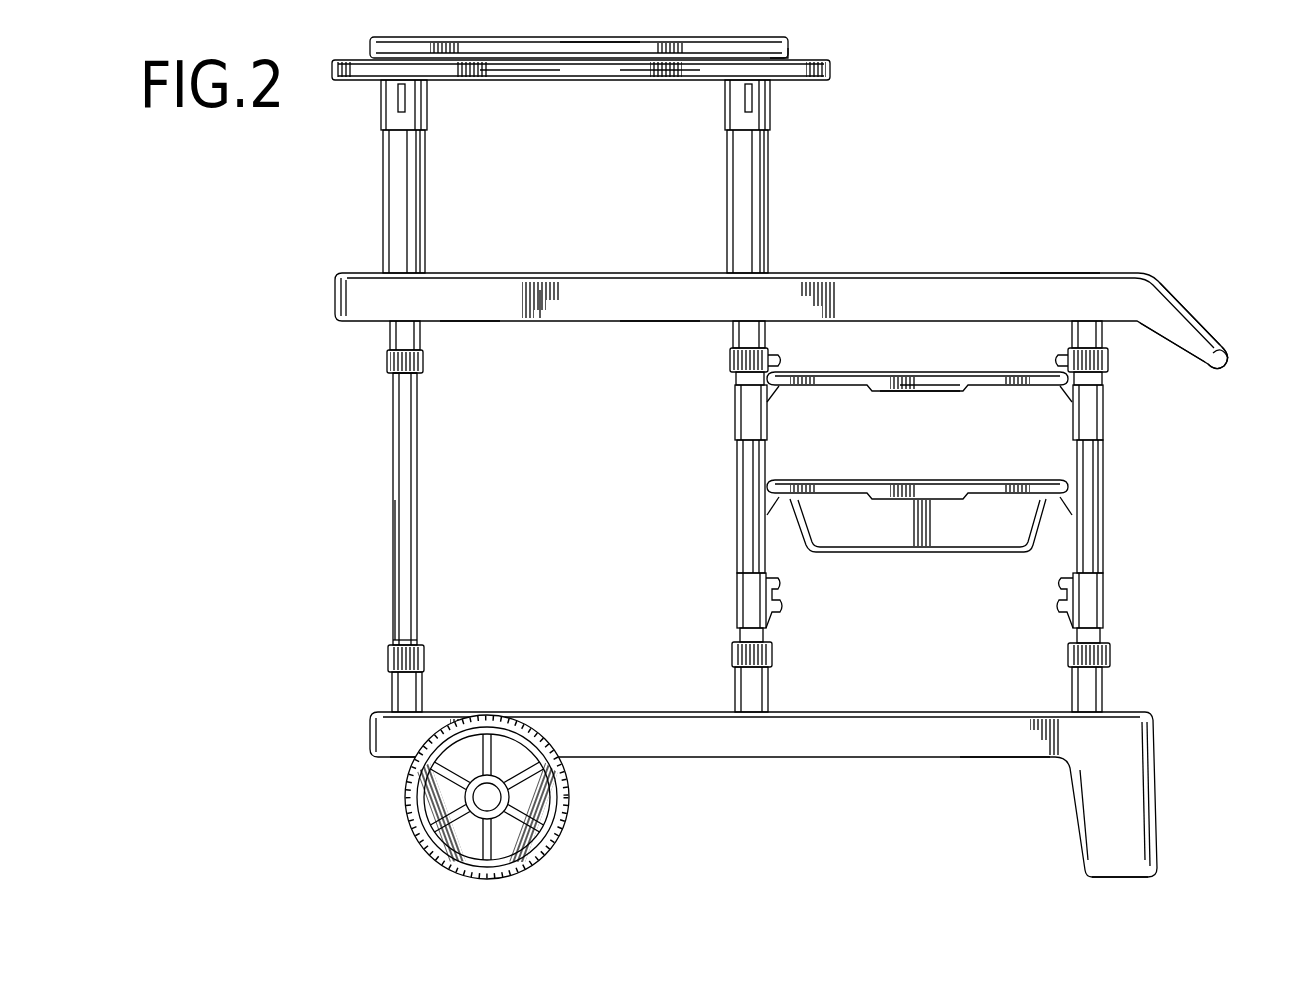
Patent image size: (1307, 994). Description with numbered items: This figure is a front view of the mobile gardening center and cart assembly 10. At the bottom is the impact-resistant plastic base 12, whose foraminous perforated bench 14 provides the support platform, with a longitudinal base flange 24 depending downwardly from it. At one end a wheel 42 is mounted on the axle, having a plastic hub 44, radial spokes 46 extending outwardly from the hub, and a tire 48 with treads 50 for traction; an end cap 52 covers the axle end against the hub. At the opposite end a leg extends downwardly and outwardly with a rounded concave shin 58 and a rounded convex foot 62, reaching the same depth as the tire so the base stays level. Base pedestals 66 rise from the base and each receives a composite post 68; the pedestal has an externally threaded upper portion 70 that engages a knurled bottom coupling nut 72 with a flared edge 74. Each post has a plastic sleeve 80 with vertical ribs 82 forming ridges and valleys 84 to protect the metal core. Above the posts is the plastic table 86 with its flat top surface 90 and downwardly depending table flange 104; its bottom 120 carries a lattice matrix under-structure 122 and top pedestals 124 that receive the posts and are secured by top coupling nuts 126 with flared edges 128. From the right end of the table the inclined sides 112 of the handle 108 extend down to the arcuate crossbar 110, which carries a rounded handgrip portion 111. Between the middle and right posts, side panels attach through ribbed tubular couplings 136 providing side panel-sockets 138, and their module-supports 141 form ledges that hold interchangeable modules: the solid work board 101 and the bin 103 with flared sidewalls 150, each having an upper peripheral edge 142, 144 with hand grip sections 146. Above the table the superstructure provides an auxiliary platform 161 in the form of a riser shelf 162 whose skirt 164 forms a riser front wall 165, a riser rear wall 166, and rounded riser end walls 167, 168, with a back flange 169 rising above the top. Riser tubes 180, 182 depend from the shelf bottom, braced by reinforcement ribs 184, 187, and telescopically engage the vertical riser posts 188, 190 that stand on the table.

The cart 10 is at (940, 229).
The base 12 is at (803, 761).
The bench 14 is at (565, 713).
The base flange 24 is at (950, 738).
The wheel 42 is at (722, 797).
The hub 44 is at (468, 803).
The radial spokes 46 is at (443, 790).
The tire 48 is at (437, 862).
The treads 50 is at (567, 828).
The end caps 52 is at (517, 807).
The shin 58 is at (1155, 792).
The foot 62 is at (1158, 873).
The base pedestal 66 is at (1107, 687).
The composite post 68 is at (397, 545).
The externally threaded upper portion 70 is at (393, 672).
The bottom coupling nut 72 is at (425, 660).
The flared edge 74 is at (395, 640).
The plastic sleeve 80 is at (1115, 516).
The vertical ribs 82 is at (747, 523).
The ridges and valleys 84 is at (420, 420).
The table 86 is at (482, 273).
The top surface 90 is at (1038, 273).
The work board 101 is at (913, 390).
The bin 103 is at (933, 527).
The table flange 104 is at (553, 305).
The handle 108 is at (1181, 346).
The crossbar 110 is at (1232, 352).
The handgrip portion 111 is at (1227, 368).
The inclined sides 112 is at (1197, 322).
The bottom 120 is at (482, 322).
The lattice matrix under-structure 122 is at (662, 322).
The top pedestal 124 is at (398, 333).
The top coupling nut 126 is at (388, 360).
The flared edge 128 is at (392, 374).
The tubular coupling 136 is at (737, 410).
The side panel-socket 138 is at (751, 600).
The module-support 141 is at (778, 607).
The upper peripheral edge 142 is at (919, 379).
The upper peripheral edge 144 is at (972, 480).
The hand grip section 146 is at (943, 378).
The flared sidewalls 150 is at (1040, 533).
The auxiliary platform 161 is at (746, 34).
The riser shelf 162 is at (514, 63).
The skirt 164 is at (548, 82).
The riser front wall 165 is at (641, 64).
The riser rear wall 166 is at (786, 60).
The riser end wall 167 is at (334, 70).
The riser end wall 168 is at (828, 70).
The back flange 169 is at (594, 40).
The riser tube 180 is at (396, 121).
The riser tube 182 is at (790, 121).
The reinforcement rib 184 is at (750, 105).
The reinforcement rib 187 is at (405, 92).
The riser post 188 is at (386, 214).
The riser post 190 is at (762, 237).